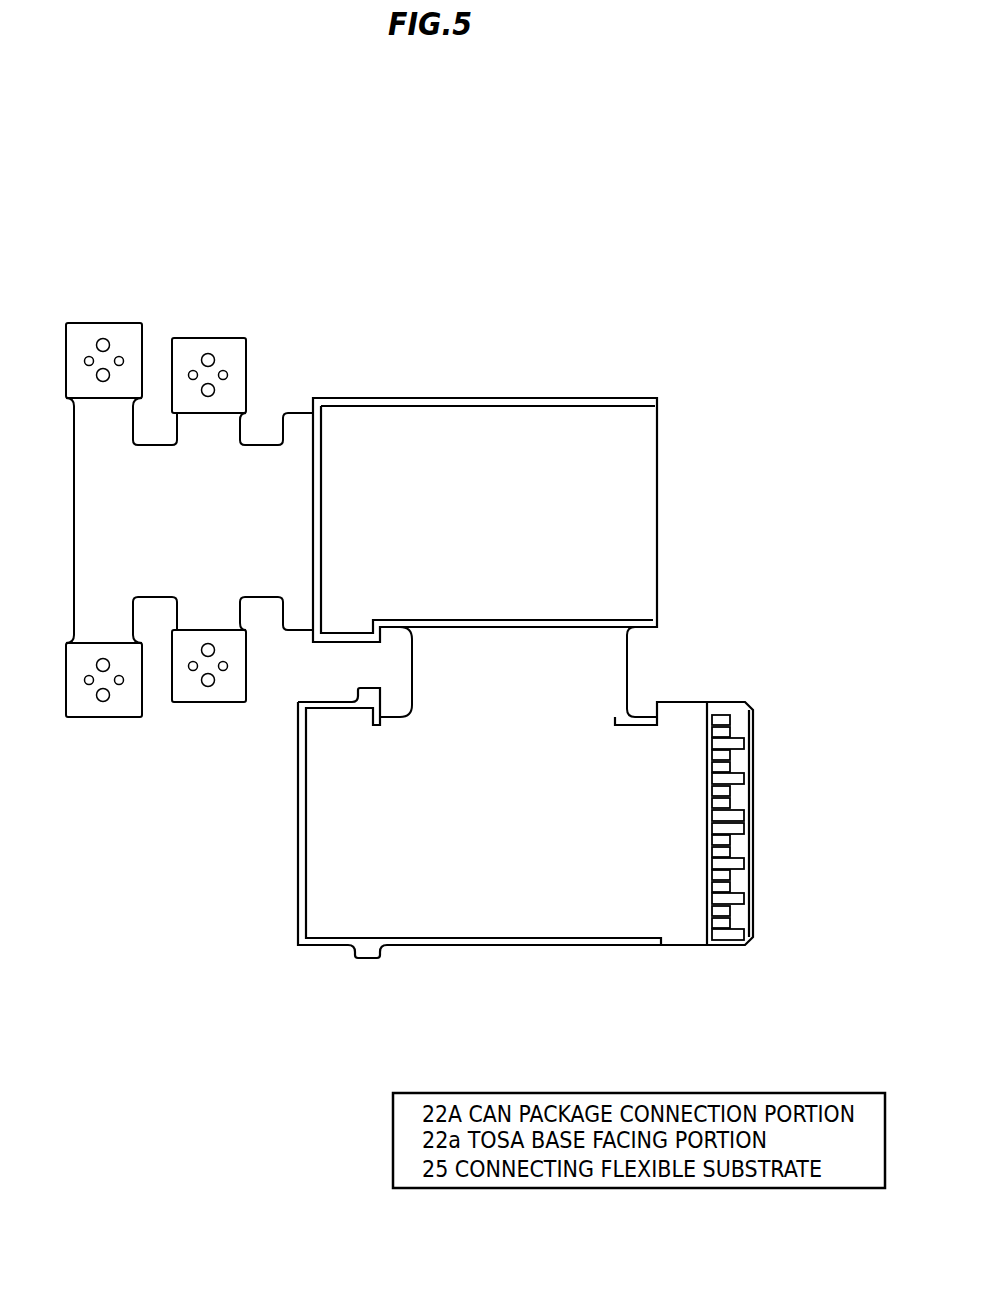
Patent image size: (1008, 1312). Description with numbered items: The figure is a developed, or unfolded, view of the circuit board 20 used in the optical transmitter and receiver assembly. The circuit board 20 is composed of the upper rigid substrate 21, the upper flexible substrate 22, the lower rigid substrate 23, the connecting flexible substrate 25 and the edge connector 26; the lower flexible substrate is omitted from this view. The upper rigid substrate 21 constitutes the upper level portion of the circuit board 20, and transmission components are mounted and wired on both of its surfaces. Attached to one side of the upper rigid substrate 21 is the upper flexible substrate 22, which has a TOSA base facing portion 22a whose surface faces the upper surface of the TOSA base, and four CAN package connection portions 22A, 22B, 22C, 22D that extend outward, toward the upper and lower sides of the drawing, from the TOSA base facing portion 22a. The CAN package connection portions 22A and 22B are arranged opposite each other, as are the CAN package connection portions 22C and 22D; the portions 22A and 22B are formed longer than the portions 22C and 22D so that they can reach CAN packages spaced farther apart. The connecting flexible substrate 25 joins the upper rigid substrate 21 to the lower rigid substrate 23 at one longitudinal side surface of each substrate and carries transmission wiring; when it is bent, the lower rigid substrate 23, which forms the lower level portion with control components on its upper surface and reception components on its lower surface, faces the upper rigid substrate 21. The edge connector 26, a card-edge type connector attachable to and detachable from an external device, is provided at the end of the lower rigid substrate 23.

The circuit board 20 is at (576, 298).
The upper rigid substrate 21 is at (645, 448).
The upper flexible substrate 22 is at (358, 212).
The CAN package connection portion 22A is at (112, 332).
The CAN package connection portion 22B is at (113, 710).
The CAN package connection portion 22C is at (202, 347).
The CAN package connection portion 22D is at (202, 692).
The TOSA base facing portion 22a is at (232, 485).
The lower rigid substrate 23 is at (408, 910).
The connecting flexible substrate 25 is at (620, 670).
The edge connector 26 is at (726, 921).